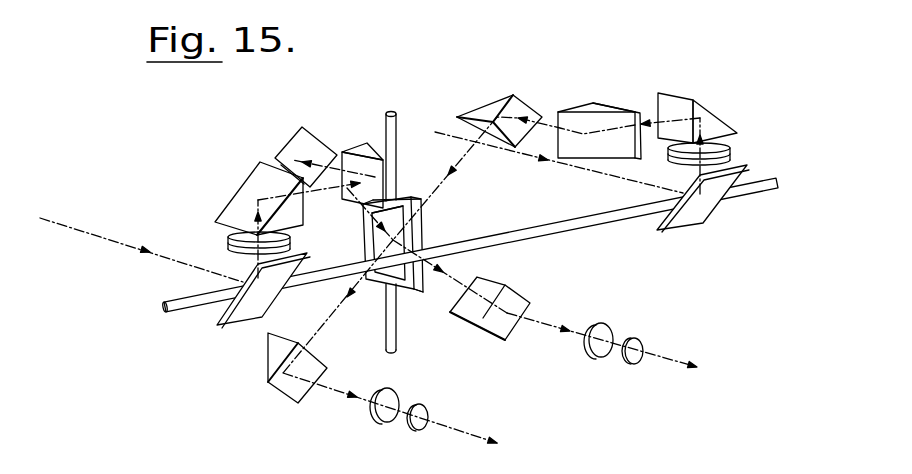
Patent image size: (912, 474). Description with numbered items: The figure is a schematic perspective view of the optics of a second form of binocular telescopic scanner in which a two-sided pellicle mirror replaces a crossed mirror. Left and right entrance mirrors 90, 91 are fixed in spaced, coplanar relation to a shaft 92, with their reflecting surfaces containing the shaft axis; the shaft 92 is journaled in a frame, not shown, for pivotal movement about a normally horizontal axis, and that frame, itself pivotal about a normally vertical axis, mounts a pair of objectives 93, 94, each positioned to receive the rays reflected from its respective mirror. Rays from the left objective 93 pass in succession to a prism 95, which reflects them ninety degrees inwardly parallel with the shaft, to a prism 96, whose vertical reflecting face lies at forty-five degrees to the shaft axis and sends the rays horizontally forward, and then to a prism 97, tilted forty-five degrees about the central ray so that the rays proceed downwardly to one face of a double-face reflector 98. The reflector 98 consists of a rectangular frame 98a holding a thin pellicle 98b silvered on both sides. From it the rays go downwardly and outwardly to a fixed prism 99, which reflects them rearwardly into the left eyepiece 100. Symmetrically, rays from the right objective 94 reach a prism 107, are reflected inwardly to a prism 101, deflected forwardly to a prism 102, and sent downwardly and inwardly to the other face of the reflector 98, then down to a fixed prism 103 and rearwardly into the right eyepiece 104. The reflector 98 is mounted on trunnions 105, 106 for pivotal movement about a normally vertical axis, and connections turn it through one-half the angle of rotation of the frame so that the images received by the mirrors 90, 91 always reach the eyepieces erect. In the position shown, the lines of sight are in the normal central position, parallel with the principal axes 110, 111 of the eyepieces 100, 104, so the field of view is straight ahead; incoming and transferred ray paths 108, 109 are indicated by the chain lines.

The left entrance mirror 90 is at (240, 314).
The right entrance mirror 91 is at (690, 224).
The shaft 92 is at (567, 230).
The left objective 93 is at (228, 243).
The right objective 94 is at (730, 150).
The prism 95 is at (247, 188).
The prism 96 is at (363, 192).
The prism 97 is at (305, 133).
The double-face reflector 98 is at (371, 284).
The rectangular frame 98a is at (421, 224).
The pellicle 98b is at (397, 212).
The fixed prism 99 is at (287, 385).
The left eyepiece 100 is at (410, 430).
The prism 101 is at (591, 106).
The prism 102 is at (487, 108).
The fixed prism 103 is at (507, 328).
The right eyepiece 104 is at (628, 362).
The trunnion 105 is at (397, 115).
The trunnion 106 is at (397, 343).
The prism 107 is at (717, 125).
The light beam 108 is at (115, 243).
The light beam 109 is at (527, 155).
The principal axis of left eyepiece 110 is at (331, 390).
The principal axis of right eyepiece 111 is at (555, 324).